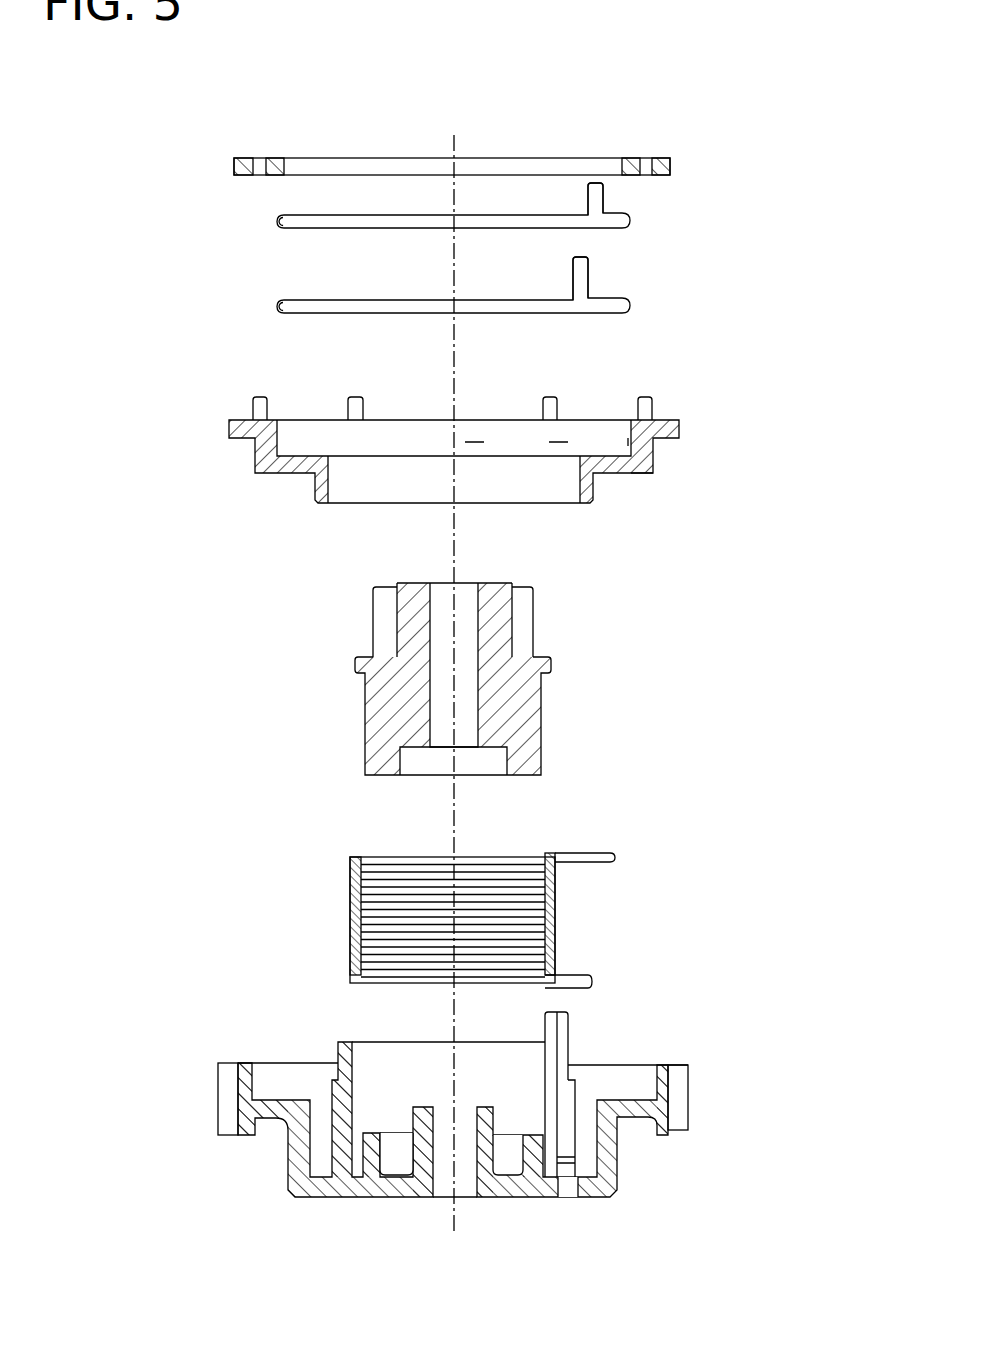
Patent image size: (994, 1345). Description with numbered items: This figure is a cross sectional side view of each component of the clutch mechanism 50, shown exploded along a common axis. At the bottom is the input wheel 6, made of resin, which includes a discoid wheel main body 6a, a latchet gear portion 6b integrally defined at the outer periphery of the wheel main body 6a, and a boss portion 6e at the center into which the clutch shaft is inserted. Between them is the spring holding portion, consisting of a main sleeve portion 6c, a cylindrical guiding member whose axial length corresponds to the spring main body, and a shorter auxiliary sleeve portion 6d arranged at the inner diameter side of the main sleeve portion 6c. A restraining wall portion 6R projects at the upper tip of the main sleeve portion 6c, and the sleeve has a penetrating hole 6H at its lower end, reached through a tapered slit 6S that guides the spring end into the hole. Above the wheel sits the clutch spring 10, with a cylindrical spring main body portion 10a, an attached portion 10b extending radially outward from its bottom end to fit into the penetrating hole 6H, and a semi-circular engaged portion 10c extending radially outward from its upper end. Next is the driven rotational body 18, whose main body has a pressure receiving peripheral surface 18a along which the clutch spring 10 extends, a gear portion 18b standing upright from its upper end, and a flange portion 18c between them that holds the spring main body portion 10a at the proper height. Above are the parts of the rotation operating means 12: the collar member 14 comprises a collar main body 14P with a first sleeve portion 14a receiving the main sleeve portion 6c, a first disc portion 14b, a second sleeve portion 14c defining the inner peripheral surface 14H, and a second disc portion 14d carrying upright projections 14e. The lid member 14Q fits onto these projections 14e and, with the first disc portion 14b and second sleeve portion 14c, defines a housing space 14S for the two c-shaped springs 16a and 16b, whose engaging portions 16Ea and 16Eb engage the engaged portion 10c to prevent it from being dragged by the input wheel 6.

The input wheel 6 is at (411, 1131).
The wheel main body 6a is at (247, 1069).
The latchet gear portion 6b is at (218, 1108).
The main sleeve portion 6c is at (338, 1050).
The auxiliary sleeve portion 6d is at (373, 1138).
The boss portion 6e is at (490, 1107).
The restraining wall portion 6R is at (568, 1020).
The slit 6S is at (565, 1095).
The penetrating hole 6H is at (565, 1168).
The clutch spring 10 is at (483, 922).
The spring main body portion 10a is at (558, 912).
The attached portion 10b is at (592, 983).
The engaged portion 10c is at (615, 862).
The rotation operating means 12 is at (122, 311).
The collar member 14 is at (444, 460).
The first sleeve portion 14a is at (321, 507).
The first disc portion 14b is at (290, 467).
The second sleeve portion 14c is at (254, 455).
The second disc portion 14d is at (228, 431).
The projections 14e is at (256, 402).
The inner peripheral surface 14H is at (628, 441).
The housing space 14S is at (516, 443).
The collar main body 14P is at (640, 472).
The lid member 14Q is at (233, 164).
The c-shaped spring 16a is at (498, 308).
The c-shaped spring 16b is at (510, 229).
The engaging portion 16Ea is at (583, 275).
The engaging portion 16Eb is at (598, 192).
The driven rotational body 18 is at (454, 679).
The pressure receiving peripheral surface 18a is at (545, 733).
The gear portion 18b is at (530, 610).
The flange portion 18c is at (555, 665).
The clutch mechanism 50 is at (222, 630).